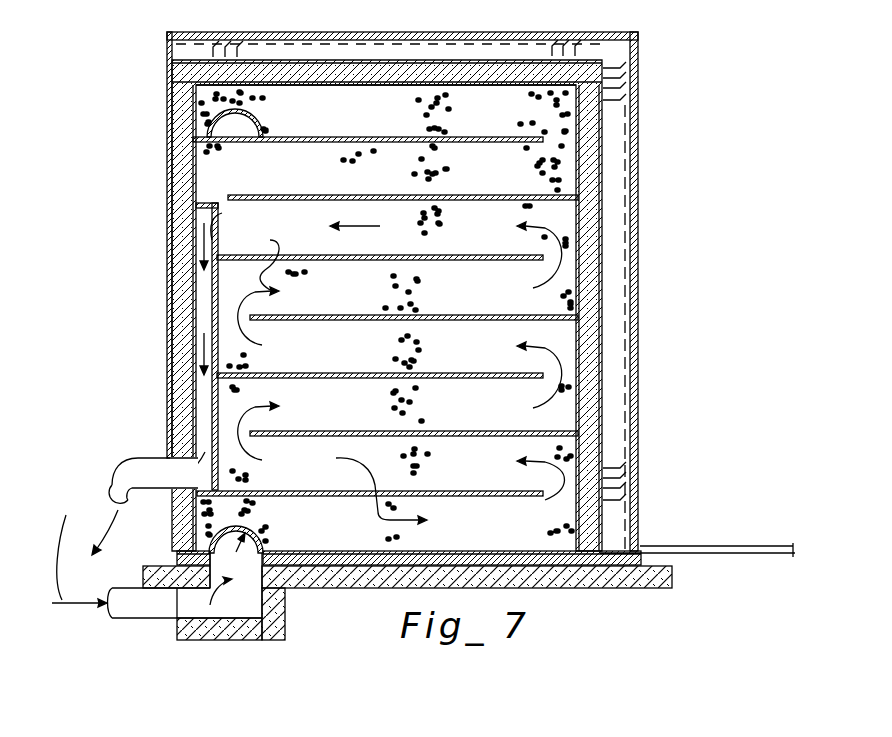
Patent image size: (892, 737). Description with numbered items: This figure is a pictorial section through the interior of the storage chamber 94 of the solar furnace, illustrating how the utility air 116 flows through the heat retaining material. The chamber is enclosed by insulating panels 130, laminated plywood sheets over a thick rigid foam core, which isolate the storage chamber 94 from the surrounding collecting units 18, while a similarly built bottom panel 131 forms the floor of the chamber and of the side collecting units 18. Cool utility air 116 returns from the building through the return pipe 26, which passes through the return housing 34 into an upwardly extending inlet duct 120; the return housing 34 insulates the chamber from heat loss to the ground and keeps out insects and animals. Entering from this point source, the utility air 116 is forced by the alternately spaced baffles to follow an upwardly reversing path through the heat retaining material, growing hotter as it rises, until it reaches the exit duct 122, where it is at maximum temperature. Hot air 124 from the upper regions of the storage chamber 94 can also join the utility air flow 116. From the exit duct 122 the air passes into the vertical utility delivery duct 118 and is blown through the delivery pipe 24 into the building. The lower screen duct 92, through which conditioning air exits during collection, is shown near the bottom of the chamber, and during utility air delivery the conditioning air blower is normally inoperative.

The collecting units 18 is at (291, 48).
The insulating panels 130 is at (531, 48).
The hot air 124 is at (219, 200).
The exit duct 122 is at (222, 213).
The utility air 116 is at (215, 241).
The vertical utility delivery duct 118 is at (203, 313).
The delivery pipe 24 is at (140, 460).
The return pipe 26 is at (135, 618).
The lower screen duct 92 is at (262, 542).
The inlet duct 120 is at (275, 600).
The return housing 34 is at (273, 640).
The storage chamber 94 is at (570, 462).
The bottom panel 131 is at (613, 556).